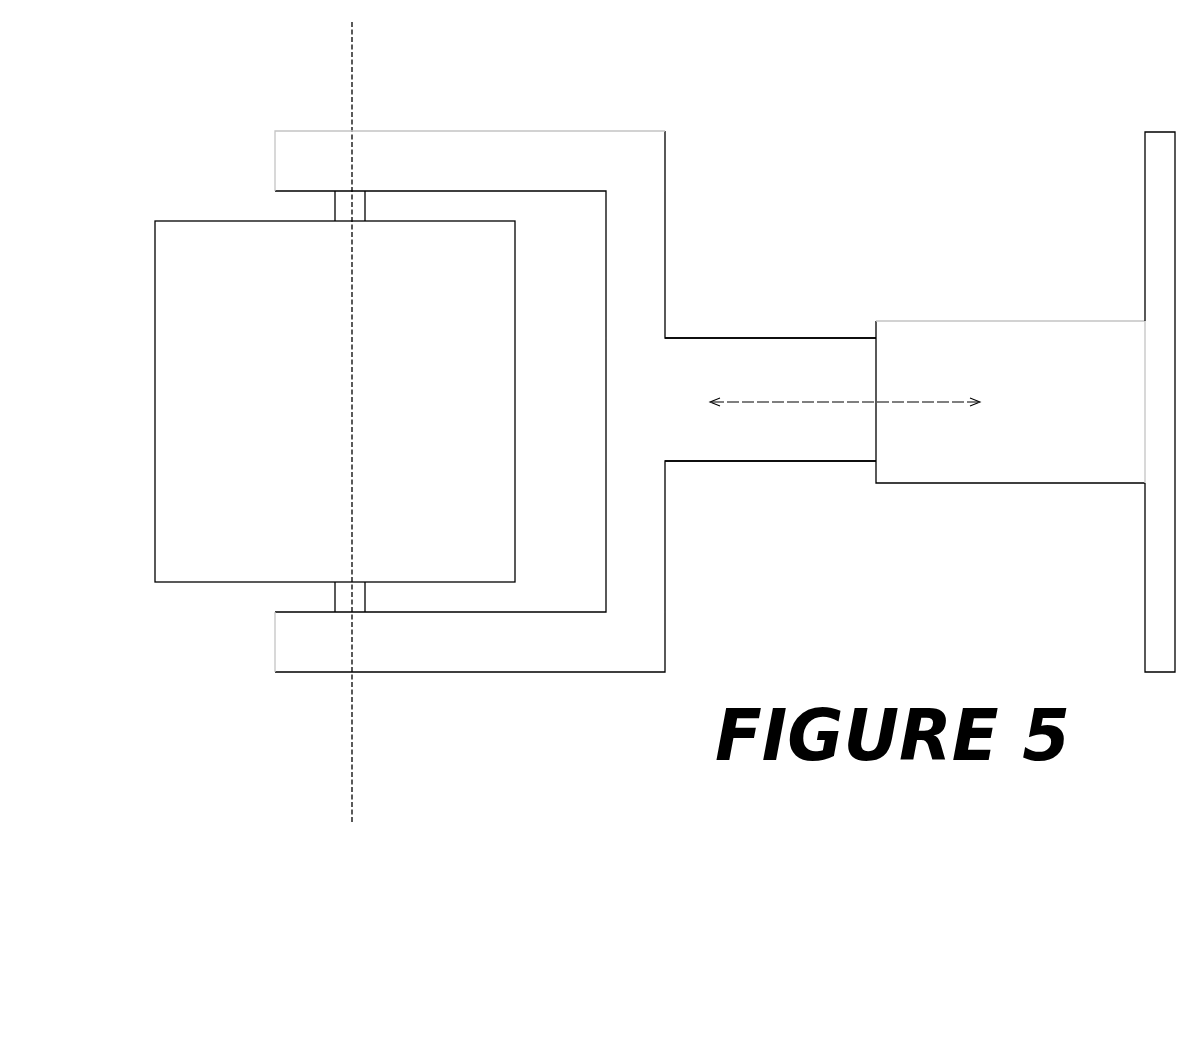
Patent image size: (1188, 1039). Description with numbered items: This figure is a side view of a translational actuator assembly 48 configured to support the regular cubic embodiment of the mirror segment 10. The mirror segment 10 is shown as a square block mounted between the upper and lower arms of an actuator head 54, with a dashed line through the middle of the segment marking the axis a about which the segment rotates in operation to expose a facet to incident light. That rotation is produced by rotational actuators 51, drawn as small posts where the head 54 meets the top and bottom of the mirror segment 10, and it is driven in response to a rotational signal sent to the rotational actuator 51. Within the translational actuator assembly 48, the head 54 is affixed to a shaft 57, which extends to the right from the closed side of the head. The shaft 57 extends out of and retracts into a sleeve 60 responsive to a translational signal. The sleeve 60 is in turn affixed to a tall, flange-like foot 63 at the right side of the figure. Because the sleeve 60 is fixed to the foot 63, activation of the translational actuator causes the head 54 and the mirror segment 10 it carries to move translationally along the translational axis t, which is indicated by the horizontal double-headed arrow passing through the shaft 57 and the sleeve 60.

The mirror segment 10 is at (410, 442).
The translational actuator assembly 48 is at (742, 186).
The rotational actuators 51 is at (352, 197).
The actuator head 54 is at (504, 662).
The shaft 57 is at (815, 350).
The sleeve 60 is at (1001, 455).
The flange-like foot 63 is at (1155, 155).
The axis a is at (352, 825).
The translational axis t is at (838, 400).